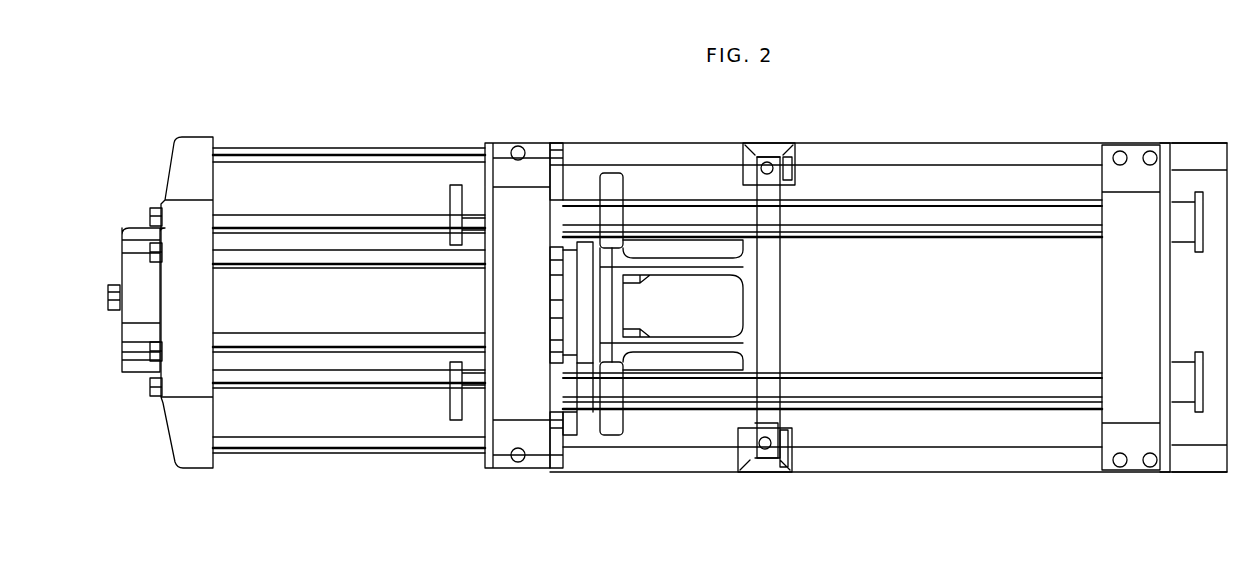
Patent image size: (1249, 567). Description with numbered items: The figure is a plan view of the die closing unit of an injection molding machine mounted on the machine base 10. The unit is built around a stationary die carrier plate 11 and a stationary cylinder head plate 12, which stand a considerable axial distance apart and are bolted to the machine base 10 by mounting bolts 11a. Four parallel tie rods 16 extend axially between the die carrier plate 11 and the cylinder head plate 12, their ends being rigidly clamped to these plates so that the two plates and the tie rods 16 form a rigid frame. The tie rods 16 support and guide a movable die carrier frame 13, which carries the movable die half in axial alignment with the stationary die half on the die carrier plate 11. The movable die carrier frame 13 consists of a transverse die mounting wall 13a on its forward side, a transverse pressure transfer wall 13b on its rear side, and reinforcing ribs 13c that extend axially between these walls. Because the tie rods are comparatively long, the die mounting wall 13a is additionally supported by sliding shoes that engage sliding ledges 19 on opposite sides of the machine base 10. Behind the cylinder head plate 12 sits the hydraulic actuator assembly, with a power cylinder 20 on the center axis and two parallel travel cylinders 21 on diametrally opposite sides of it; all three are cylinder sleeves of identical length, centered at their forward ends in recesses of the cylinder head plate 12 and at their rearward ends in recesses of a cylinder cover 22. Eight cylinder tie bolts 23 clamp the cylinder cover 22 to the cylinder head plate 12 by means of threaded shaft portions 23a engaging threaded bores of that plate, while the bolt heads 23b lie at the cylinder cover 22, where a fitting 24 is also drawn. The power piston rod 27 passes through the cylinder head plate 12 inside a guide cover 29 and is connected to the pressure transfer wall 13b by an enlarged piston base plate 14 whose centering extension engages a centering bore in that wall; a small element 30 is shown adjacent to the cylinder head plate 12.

The machine base 10 is at (1222, 440).
The stationary die carrier plate 11 is at (1167, 398).
The mounting bolts 11a is at (515, 147).
The stationary cylinder head plate 12 is at (487, 215).
The movable die carrier frame 13 is at (782, 336).
The die mounting wall 13a is at (768, 290).
The pressure transfer wall 13b is at (610, 185).
The coupling frame 13c is at (695, 260).
The piston base plate 14 is at (587, 357).
The tie rods 16 is at (990, 385).
The sliding ledges 19 is at (906, 160).
The power cylinder 20 is at (282, 242).
The travel cylinders 21 is at (312, 178).
The cylinder cover 22 is at (172, 222).
The cylinder tie bolts 23 is at (388, 253).
The threaded shaft portions 23a is at (482, 345).
The heads of the tie bolts 23b is at (160, 380).
The connection stub 24 is at (110, 283).
The power piston rod 27 is at (572, 297).
The guide covers 29 is at (556, 318).
The clamp strip 30 is at (553, 165).